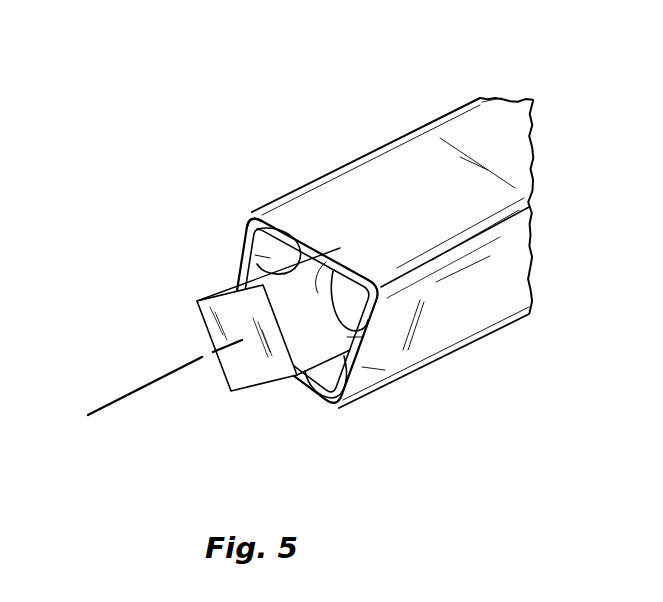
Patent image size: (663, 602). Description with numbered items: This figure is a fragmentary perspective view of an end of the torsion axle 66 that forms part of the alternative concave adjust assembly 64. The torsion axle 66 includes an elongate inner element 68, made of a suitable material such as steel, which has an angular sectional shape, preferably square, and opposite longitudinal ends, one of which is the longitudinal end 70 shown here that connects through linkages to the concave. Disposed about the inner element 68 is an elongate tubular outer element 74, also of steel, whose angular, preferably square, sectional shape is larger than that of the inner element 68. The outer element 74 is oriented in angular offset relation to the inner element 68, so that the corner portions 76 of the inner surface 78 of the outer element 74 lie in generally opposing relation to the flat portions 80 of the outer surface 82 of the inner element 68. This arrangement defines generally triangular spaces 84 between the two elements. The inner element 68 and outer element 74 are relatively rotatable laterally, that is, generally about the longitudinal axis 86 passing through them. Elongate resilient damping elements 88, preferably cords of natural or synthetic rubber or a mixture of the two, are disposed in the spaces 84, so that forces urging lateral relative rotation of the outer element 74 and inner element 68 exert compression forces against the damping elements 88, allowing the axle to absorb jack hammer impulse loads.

The concave adjust assembly 64 is at (424, 210).
The torsion axle 66 is at (372, 157).
The inner element 68 is at (223, 374).
The longitudinal end 70 is at (216, 285).
The outer element 74 is at (529, 318).
The corner portions 76 is at (386, 291).
The inner surface 78 is at (251, 218).
The flat portions 80 is at (235, 285).
The outer surface 82 is at (318, 293).
The spaces 84 is at (263, 228).
The longitudinal axis 86 is at (142, 388).
The damping elements 88 is at (262, 254).